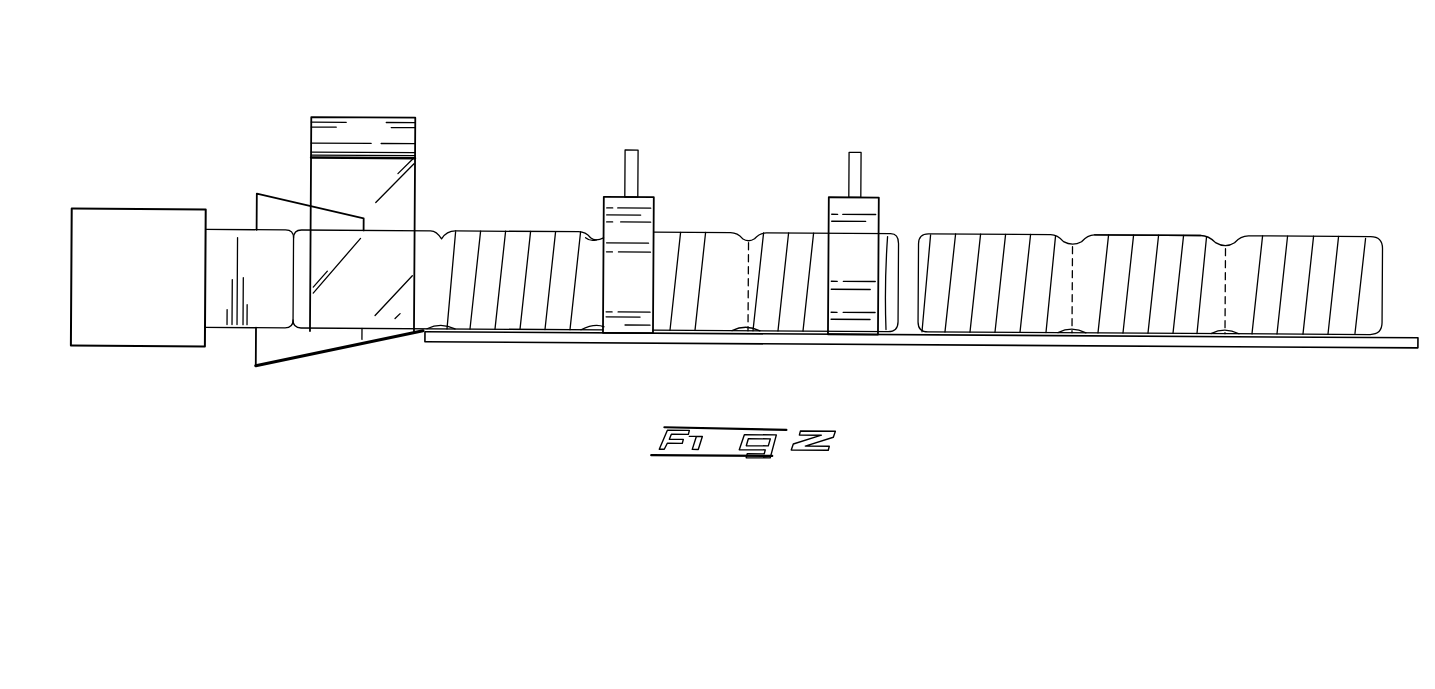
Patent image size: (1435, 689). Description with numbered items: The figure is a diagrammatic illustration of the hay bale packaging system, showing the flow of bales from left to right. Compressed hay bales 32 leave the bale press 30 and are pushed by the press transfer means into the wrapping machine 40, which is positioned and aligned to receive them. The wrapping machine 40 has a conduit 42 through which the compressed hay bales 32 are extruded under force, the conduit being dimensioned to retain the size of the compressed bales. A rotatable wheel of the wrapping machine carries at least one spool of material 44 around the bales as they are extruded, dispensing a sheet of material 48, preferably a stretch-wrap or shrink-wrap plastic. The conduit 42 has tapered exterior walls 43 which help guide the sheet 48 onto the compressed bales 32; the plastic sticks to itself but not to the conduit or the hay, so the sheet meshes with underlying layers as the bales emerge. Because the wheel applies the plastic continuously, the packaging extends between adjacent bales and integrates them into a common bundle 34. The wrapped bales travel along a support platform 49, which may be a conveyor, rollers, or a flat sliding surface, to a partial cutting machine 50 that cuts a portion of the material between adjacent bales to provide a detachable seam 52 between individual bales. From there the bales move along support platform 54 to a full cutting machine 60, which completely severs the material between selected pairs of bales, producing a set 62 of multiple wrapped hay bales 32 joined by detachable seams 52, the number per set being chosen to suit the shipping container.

The bale press 30 is at (130, 347).
The compressed hay bales 32 is at (550, 310).
The common bundle 34 is at (534, 210).
The wrapping machine 40 is at (342, 240).
The conduit 42 is at (270, 348).
The tapered exterior walls 43 is at (272, 194).
The spool of material 44 is at (414, 139).
The sheet of material 48 is at (325, 185).
The support platform 49 is at (573, 333).
The partial cutting machine 50 is at (660, 146).
The detachable seam 52 is at (750, 289).
The support platform 54 is at (720, 336).
The full cutting machine 60 is at (884, 149).
The set of wrapped hay bales 62 is at (1176, 225).